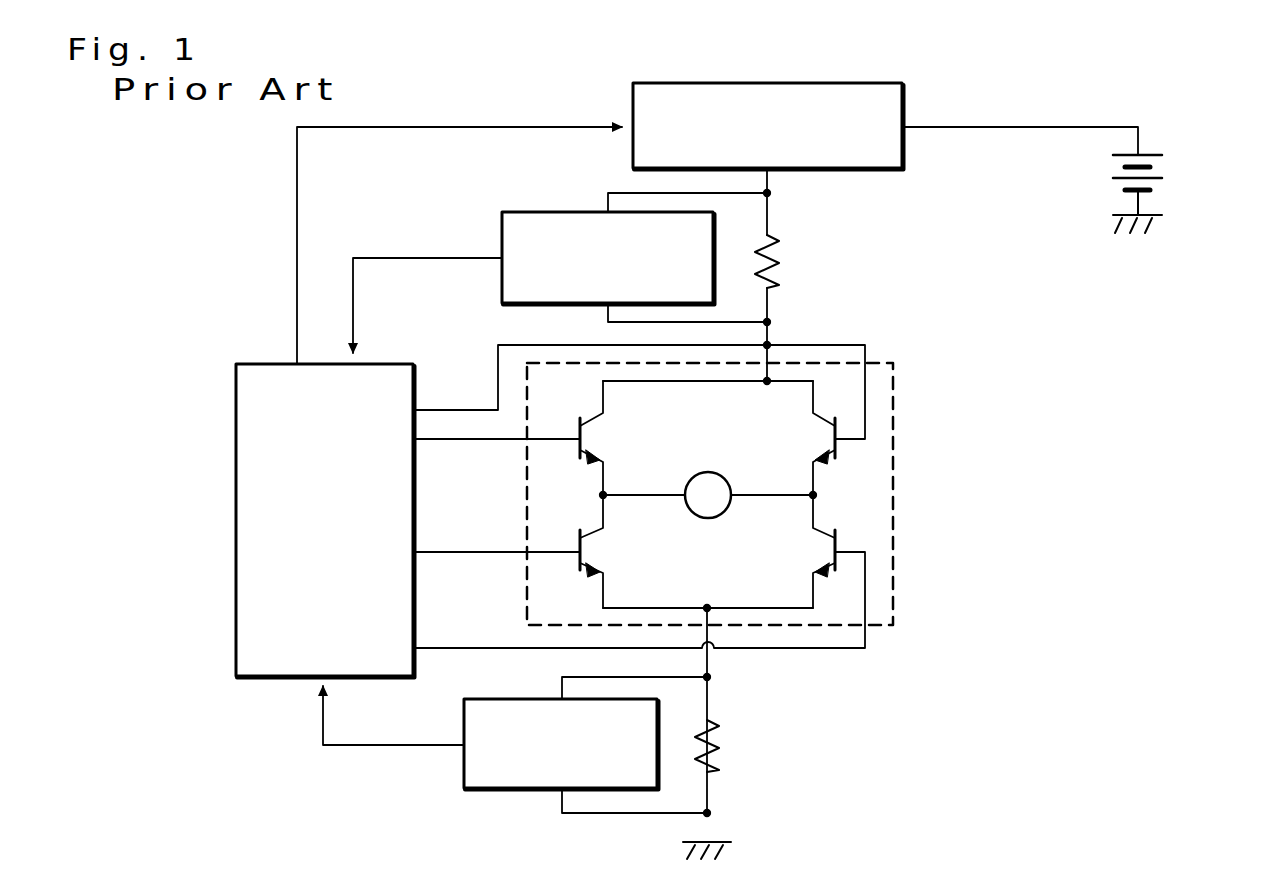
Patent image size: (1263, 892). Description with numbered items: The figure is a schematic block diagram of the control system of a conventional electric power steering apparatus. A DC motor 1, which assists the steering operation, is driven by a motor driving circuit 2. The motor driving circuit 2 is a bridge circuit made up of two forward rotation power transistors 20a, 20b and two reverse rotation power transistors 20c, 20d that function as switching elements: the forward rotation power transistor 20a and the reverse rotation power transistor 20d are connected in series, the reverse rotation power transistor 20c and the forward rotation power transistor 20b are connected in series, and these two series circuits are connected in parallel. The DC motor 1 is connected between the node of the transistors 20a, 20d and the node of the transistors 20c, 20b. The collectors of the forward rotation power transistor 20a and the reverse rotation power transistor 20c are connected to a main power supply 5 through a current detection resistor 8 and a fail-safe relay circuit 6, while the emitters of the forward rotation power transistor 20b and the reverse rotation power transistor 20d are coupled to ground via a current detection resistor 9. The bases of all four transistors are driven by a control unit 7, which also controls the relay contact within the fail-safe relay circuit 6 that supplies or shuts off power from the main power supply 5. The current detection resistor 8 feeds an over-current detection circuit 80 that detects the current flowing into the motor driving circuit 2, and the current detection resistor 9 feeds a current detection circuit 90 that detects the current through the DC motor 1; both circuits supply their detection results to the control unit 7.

The DC motor 1 is at (710, 472).
The motor driving circuit 2 is at (878, 363).
The main power supply 5 is at (1150, 146).
The fail-safe relay circuit 6 is at (830, 83).
The control unit 7 is at (273, 362).
The current detection resistor 8 is at (785, 264).
The current detection resistor 9 is at (728, 753).
The forward rotation power transistor 20a is at (578, 436).
The forward rotation power transistor 20b is at (836, 556).
The reverse rotation power transistor 20c is at (838, 448).
The reverse rotation power transistor 20d is at (578, 551).
The over-current detection circuit 80 is at (532, 211).
The current detection circuit 90 is at (468, 790).